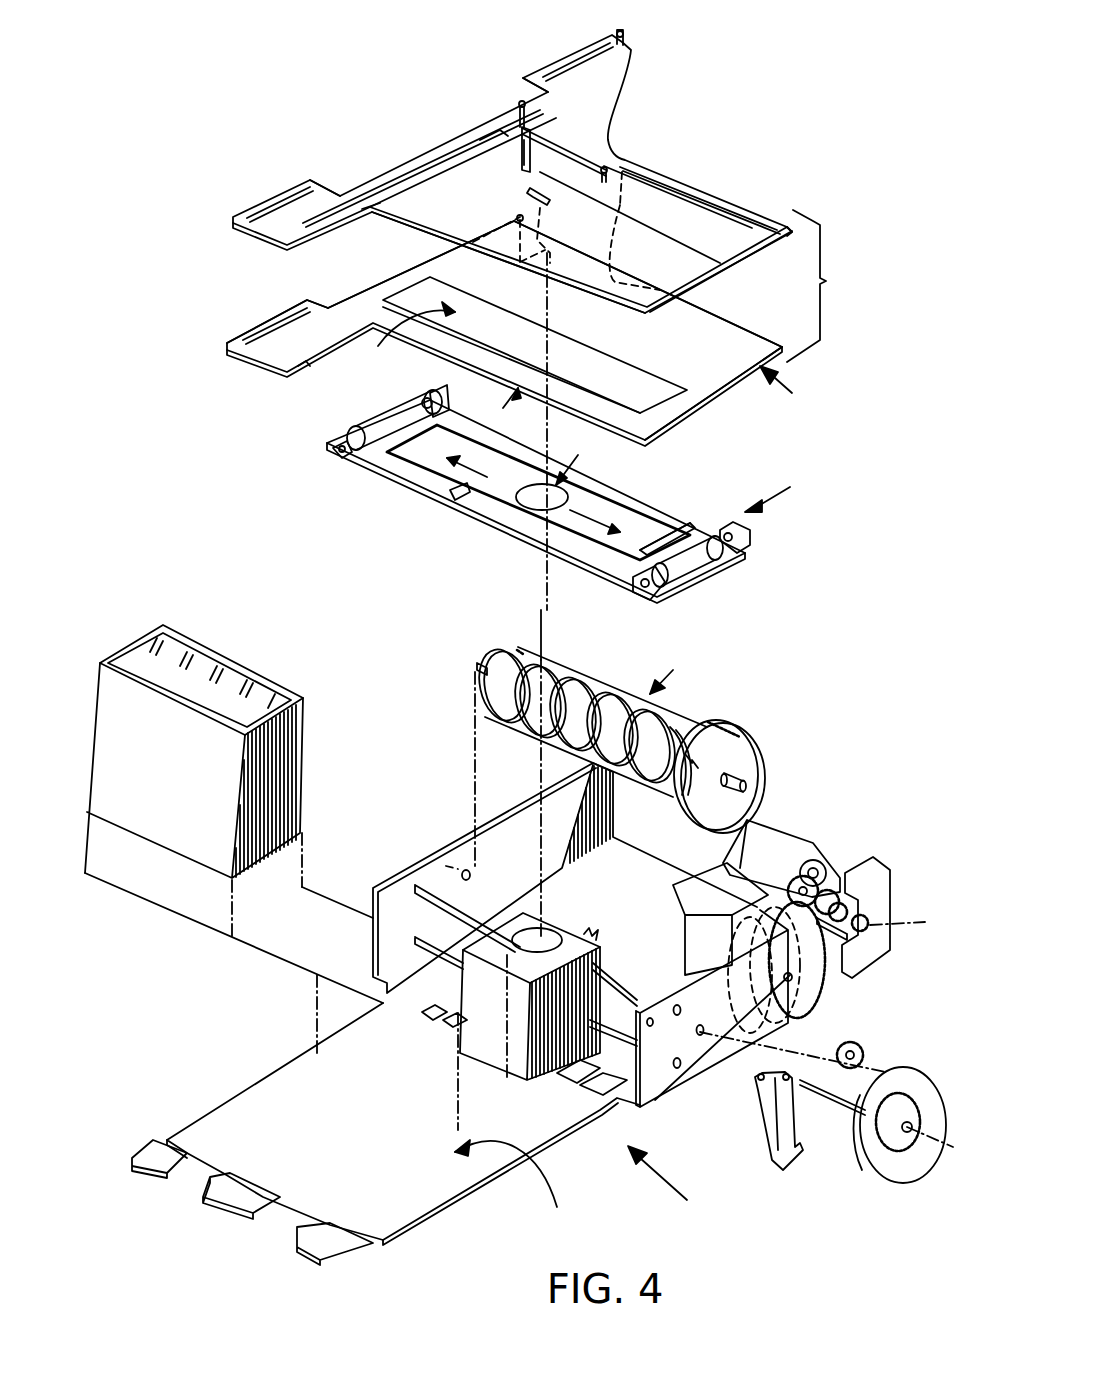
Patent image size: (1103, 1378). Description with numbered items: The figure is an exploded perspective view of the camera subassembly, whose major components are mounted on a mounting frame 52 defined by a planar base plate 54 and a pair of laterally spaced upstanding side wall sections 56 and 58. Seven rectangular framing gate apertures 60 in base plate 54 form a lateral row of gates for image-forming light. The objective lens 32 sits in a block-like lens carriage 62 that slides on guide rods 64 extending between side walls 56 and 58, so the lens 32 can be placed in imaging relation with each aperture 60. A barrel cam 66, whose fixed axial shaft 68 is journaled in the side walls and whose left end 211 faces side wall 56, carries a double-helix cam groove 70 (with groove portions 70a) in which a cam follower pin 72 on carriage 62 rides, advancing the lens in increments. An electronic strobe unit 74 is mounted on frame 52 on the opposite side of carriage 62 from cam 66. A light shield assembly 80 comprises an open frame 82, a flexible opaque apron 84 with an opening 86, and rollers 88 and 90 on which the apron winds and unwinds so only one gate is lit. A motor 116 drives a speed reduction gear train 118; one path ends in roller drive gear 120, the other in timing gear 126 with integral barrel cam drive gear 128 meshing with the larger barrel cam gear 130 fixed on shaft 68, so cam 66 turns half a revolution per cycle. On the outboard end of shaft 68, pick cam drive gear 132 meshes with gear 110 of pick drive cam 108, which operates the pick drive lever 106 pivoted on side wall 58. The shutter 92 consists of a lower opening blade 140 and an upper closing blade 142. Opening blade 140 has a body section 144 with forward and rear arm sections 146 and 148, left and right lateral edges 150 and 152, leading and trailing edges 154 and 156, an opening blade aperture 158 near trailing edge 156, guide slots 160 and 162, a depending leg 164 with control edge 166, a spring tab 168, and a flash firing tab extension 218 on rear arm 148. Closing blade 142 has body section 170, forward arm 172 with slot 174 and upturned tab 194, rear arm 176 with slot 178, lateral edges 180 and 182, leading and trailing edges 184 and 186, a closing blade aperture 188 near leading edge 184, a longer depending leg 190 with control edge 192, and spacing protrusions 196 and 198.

The objective lens 32 is at (545, 940).
The mounting frame 52 is at (659, 1186).
The base plate 54 is at (386, 1120).
The side wall section 56 is at (440, 866).
The side wall section 58 is at (657, 1103).
The framing gate apertures 60 is at (448, 1000).
The lens carriage 62 is at (604, 952).
The guide rods 64 is at (614, 990).
The barrel cam 66 is at (596, 722).
The barrel cam shaft 68 is at (474, 667).
The cam groove 70 is at (588, 690).
The ring ends 70a is at (516, 648).
The cam follower pin 72 is at (599, 920).
The electronic strobe unit 74 is at (305, 716).
The light shield assembly 80 is at (768, 491).
The open frame 82 is at (683, 527).
The apron 84 is at (645, 520).
The opening 86 is at (554, 471).
The roller 88 is at (428, 400).
The roller 90 is at (724, 547).
The shutter 92 is at (819, 286).
The pick drive lever 106 is at (774, 1112).
The pick drive cam 108 is at (862, 1100).
The gear 110 is at (905, 1160).
The electrical motor 116 is at (790, 832).
The speed reduction gear train 118 is at (840, 880).
The roller drive gear 120 is at (888, 917).
The timing gear 126 is at (770, 920).
The barrel cam drive gear 128 is at (800, 975).
The barrel cam gear 130 is at (738, 724).
The pick cam drive gear 132 is at (855, 1046).
The opening shutter blade 140 is at (786, 388).
The closing blade 142 is at (770, 248).
The body section 144 is at (725, 363).
The forward arm section 146 is at (520, 168).
The rear arm section 148 is at (266, 350).
The left lateral edge 150 is at (384, 285).
The right lateral edge 152 is at (688, 418).
The leading edge 154 is at (725, 322).
The trailing edge 156 is at (511, 366).
The opening blade aperture 158 is at (523, 345).
The guide slot 160 is at (567, 180).
The guide slot 162 is at (280, 320).
The opening blade leg 164 is at (512, 262).
The control edge 166 is at (540, 243).
The depending tab 168 is at (606, 178).
The body section 170 is at (414, 210).
The forward arm section 172 is at (542, 72).
The guide slot 174 is at (570, 62).
The rear arm section 176 is at (318, 186).
The guide slot 178 is at (286, 198).
The left lateral edge 180 is at (412, 160).
The right lateral edge 182 is at (742, 264).
The leading edge 184 is at (670, 180).
The trailing edge 186 is at (432, 238).
The closing blade aperture 188 is at (690, 213).
The closing blade leg 190 is at (520, 156).
The control edge 192 is at (536, 120).
The upturned tab 194 is at (618, 27).
The protrusion 196 is at (468, 140).
The protrusion 198 is at (767, 226).
The left end 211 is at (494, 660).
The flash firing tab extension 218 is at (298, 364).